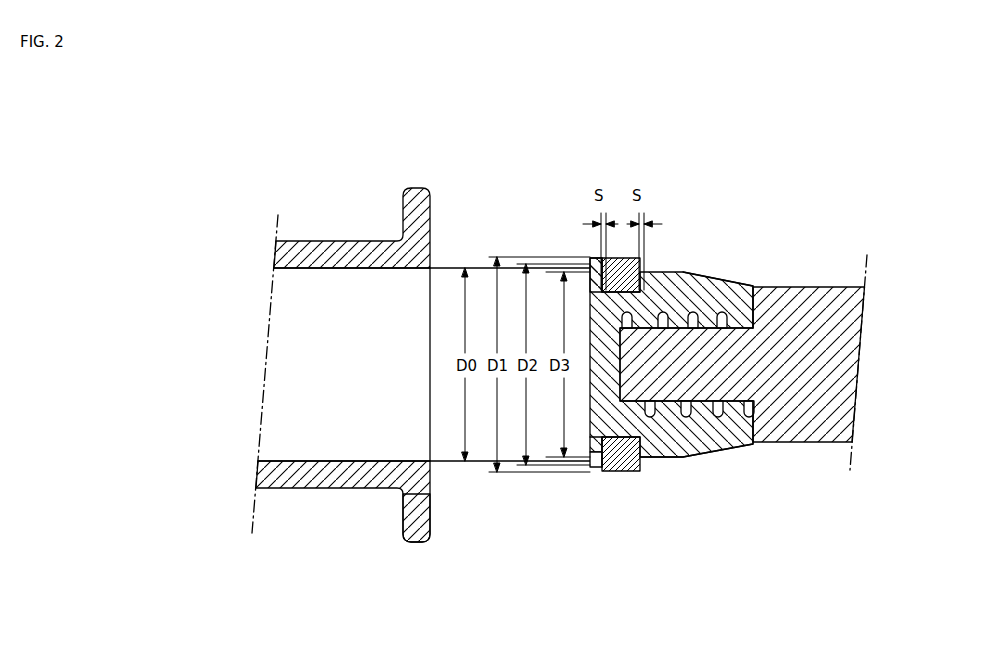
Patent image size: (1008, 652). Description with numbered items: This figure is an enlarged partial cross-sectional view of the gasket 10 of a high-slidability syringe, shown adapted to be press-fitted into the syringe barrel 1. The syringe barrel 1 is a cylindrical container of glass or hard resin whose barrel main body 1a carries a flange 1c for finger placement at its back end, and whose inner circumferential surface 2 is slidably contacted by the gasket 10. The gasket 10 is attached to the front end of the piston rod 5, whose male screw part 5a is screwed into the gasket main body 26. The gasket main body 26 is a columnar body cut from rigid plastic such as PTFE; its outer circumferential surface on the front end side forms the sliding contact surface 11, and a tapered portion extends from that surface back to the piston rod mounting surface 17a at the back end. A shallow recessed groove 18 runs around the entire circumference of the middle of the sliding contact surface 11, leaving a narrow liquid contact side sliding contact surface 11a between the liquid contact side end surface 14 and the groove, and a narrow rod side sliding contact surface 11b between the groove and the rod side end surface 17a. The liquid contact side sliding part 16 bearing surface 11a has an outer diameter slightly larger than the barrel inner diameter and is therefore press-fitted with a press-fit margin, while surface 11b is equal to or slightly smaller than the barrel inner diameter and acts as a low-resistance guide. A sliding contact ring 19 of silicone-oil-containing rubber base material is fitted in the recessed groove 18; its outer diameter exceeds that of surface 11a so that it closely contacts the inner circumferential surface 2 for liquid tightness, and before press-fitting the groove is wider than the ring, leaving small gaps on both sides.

The syringe barrel 1 is at (416, 388).
The barrel main body 1a is at (346, 472).
The flange 1c is at (418, 530).
The inner circumferential surface 2 is at (276, 268).
The piston rod 5 is at (742, 351).
The male screw part 5a is at (707, 385).
The gasket 10 is at (646, 364).
The sliding contact surface 11 is at (646, 387).
The liquid contact side sliding contact surface 11a is at (598, 467).
The rod side sliding contact surface 11b is at (657, 457).
The liquid contact side end surface 14 is at (592, 443).
The liquid contact side sliding part 16 is at (596, 270).
The piston rod mounting surface 17a is at (766, 285).
The recessed groove 18 is at (622, 472).
The sliding contact ring 19 is at (622, 258).
The gasket main body 26 is at (728, 283).